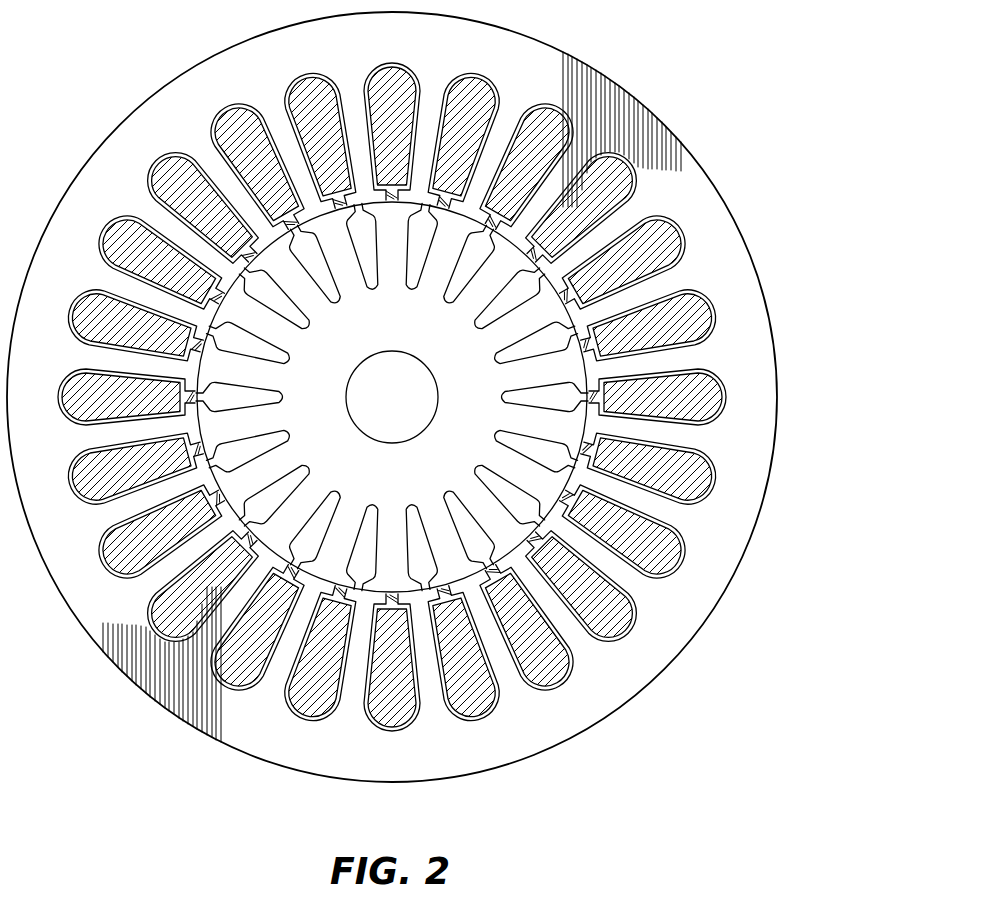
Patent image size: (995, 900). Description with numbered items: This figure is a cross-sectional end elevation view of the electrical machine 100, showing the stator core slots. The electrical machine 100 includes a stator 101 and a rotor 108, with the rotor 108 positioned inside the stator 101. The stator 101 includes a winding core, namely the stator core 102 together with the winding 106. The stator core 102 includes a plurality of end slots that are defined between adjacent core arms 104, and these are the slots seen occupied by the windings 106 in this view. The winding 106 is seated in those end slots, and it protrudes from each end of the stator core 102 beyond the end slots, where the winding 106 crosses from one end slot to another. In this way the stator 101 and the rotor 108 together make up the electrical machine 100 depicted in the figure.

The electrical machine 100 is at (171, 65).
The stator 101 is at (611, 76).
The stator core 102 is at (670, 180).
The core arms 104 is at (662, 508).
The winding 106 is at (552, 657).
The rotor 108 is at (471, 353).